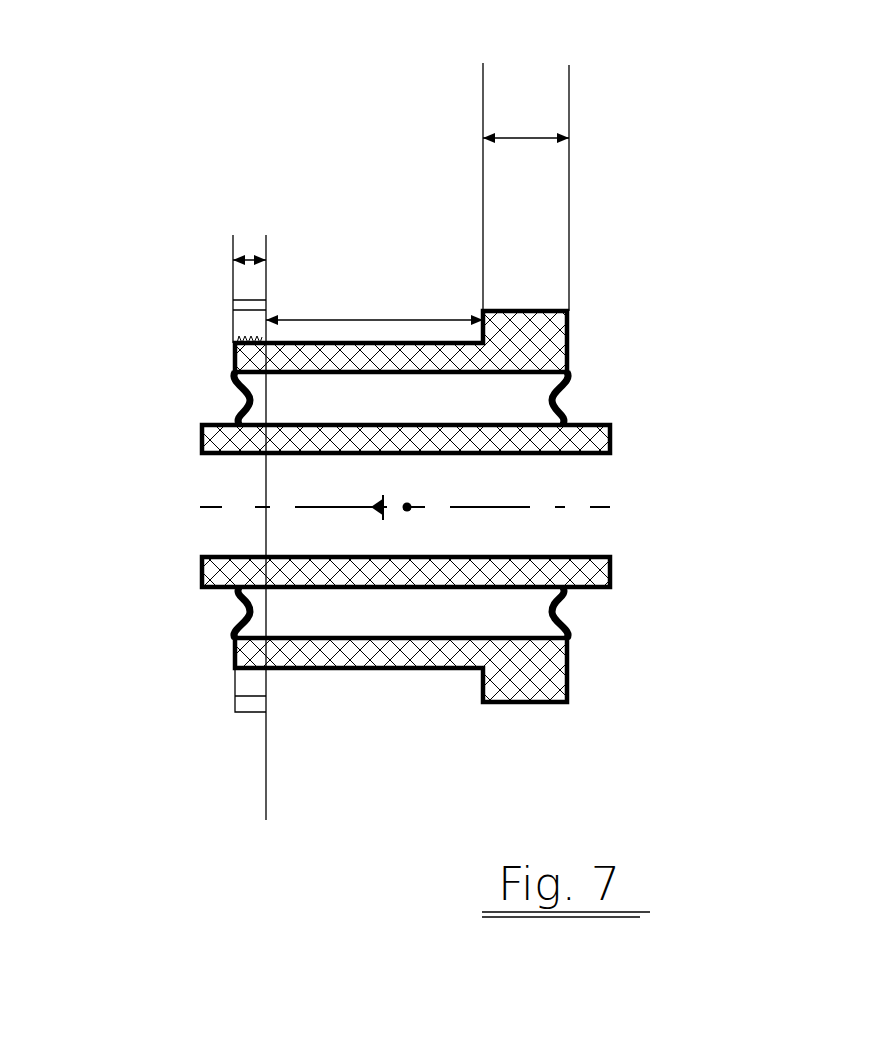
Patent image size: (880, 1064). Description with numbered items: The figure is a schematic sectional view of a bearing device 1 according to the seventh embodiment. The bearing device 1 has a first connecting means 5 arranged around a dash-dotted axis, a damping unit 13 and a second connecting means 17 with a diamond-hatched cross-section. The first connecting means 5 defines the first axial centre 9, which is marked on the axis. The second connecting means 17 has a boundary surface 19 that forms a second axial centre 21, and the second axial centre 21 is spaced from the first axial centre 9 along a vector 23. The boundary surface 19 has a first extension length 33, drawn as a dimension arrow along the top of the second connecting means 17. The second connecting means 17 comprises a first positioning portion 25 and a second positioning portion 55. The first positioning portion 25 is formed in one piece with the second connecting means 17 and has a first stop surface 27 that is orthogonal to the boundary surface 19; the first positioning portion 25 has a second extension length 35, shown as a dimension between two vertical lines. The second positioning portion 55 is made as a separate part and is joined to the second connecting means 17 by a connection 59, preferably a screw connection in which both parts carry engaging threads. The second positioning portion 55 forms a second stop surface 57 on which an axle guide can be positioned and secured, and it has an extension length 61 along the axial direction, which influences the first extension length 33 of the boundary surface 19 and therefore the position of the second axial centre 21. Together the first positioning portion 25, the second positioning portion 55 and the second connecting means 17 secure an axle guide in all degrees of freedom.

The bearing device 1 is at (104, 684).
The first connecting means 5 is at (612, 578).
The first axial centre 9 is at (409, 512).
The damping unit 13 is at (363, 670).
The second connecting means 17 is at (568, 357).
The boundary surface 19 is at (342, 343).
The second axial centre 21 is at (374, 502).
The vector 23 is at (400, 502).
The first positioning portion 25 is at (570, 330).
The first stop surface 27 is at (478, 692).
The first extension length 33 is at (405, 320).
The second extension length 35 is at (522, 136).
The second positioning portion 55 is at (255, 323).
The second stop surface 57 is at (272, 695).
The connection 59 is at (232, 340).
The extension length 61 is at (250, 257).